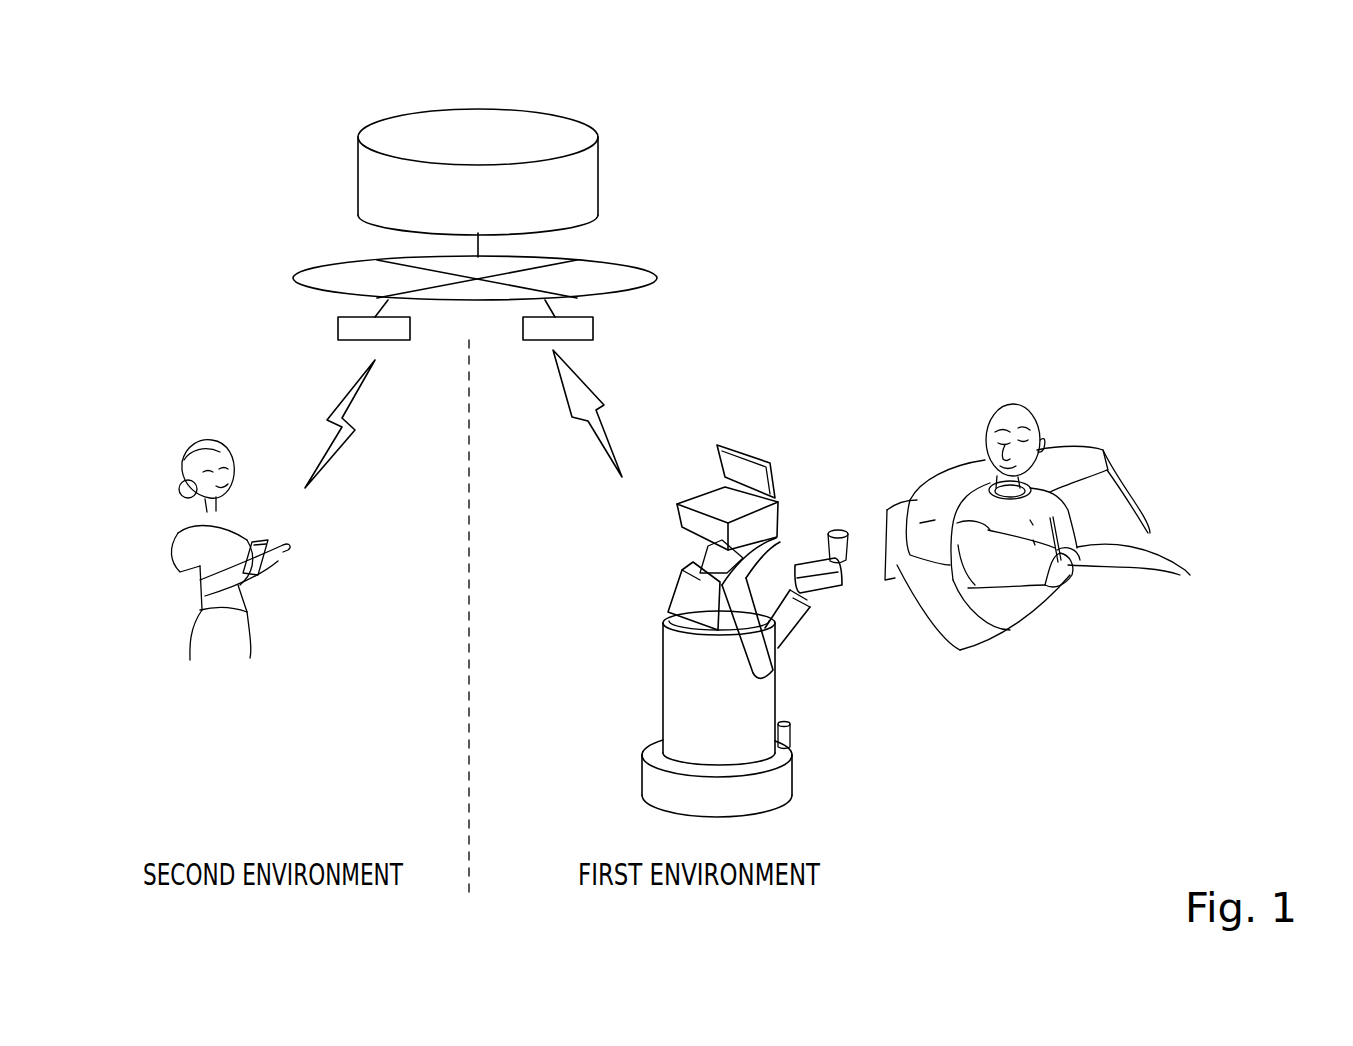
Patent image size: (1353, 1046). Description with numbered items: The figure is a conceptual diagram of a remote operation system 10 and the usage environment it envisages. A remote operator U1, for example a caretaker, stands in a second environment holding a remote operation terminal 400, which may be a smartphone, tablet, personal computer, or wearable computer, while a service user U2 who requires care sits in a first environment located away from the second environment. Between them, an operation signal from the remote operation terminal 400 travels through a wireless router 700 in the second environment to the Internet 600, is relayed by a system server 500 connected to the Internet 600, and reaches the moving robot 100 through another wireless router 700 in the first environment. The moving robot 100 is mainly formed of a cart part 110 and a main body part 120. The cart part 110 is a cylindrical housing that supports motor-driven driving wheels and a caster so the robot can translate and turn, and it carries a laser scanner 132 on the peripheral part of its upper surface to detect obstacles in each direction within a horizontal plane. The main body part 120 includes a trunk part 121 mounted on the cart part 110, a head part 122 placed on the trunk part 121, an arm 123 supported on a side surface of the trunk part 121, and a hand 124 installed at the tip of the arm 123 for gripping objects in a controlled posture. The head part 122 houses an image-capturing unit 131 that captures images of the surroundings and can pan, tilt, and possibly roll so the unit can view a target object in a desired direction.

The remote operation system 10 is at (1062, 200).
The moving robot 100 is at (770, 400).
The cart part 110 is at (623, 728).
The main body part 120 is at (623, 493).
The trunk part 121 is at (677, 600).
The head part 122 is at (700, 476).
The arm 123 is at (782, 645).
The hand 124 is at (827, 583).
The image-capturing unit 131 is at (778, 507).
The laser scanner 132 is at (792, 743).
The remote operation terminal 400 is at (260, 540).
The system server 500 is at (527, 108).
The Internet 600 is at (625, 262).
The wireless router 700 is at (338, 328).
The remote operator U1 is at (178, 533).
The service user U2 is at (965, 510).